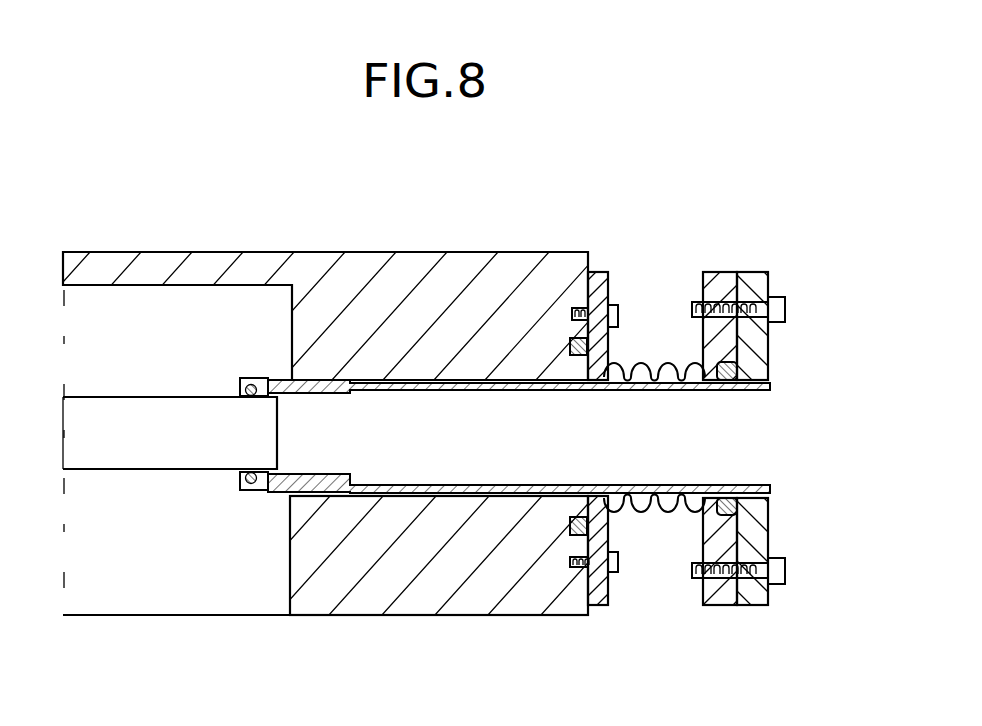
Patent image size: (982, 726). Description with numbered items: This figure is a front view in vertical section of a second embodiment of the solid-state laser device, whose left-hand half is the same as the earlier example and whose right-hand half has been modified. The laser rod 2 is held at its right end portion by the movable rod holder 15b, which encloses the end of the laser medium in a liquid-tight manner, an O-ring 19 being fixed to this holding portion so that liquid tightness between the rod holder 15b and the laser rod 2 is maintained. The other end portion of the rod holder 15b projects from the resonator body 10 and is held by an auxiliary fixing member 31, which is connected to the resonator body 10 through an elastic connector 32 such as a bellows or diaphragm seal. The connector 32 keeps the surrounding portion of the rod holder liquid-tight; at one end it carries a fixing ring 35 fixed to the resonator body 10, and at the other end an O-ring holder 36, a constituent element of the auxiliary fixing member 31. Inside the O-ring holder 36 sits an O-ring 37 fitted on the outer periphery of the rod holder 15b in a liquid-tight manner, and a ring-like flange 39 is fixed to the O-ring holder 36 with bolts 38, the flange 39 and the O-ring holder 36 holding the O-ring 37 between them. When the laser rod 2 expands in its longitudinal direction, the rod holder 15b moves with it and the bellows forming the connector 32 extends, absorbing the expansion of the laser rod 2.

The laser rod 2 is at (151, 417).
The resonator body 10 is at (378, 278).
The rod holder 15b is at (477, 380).
The O-ring 19 is at (257, 380).
The auxiliary fixing member 31 is at (775, 281).
The elastic connector 32 is at (661, 512).
The fixing ring 35 is at (597, 283).
The O-ring holder 36 is at (722, 280).
The O-ring 37 is at (737, 376).
The bolts 38 is at (785, 310).
The flange 39 is at (752, 532).